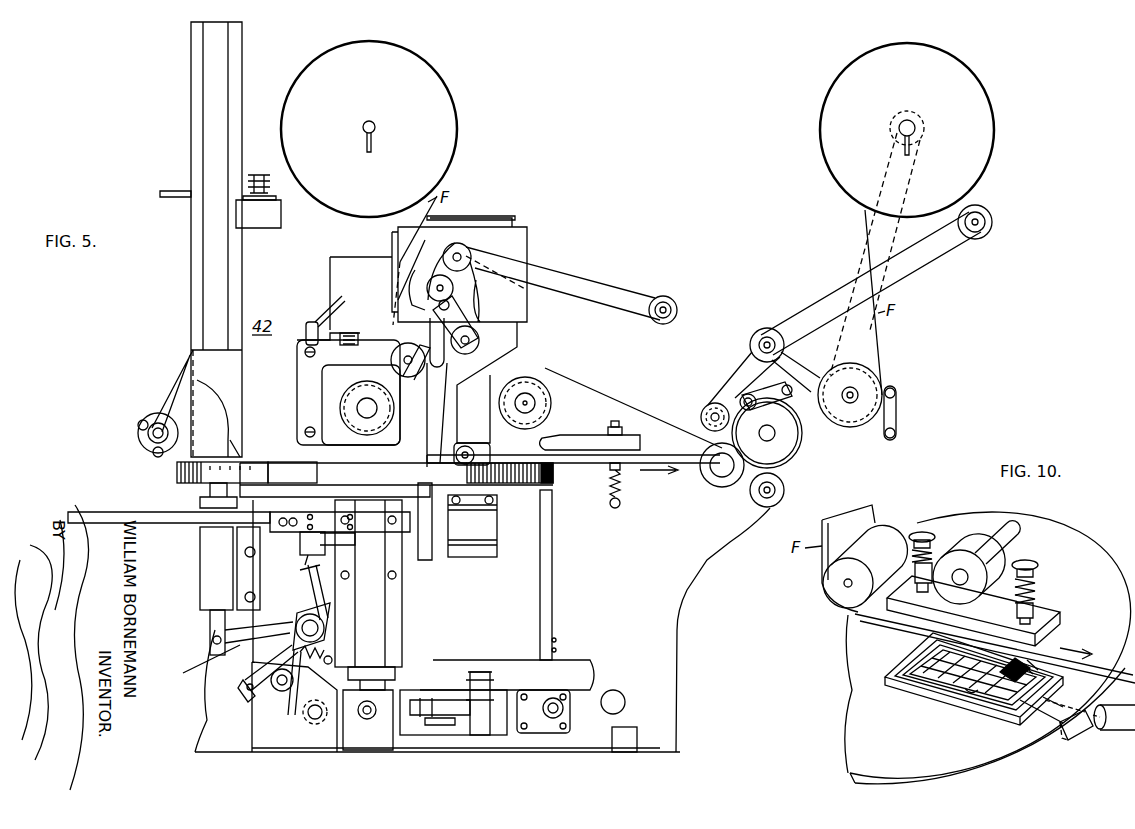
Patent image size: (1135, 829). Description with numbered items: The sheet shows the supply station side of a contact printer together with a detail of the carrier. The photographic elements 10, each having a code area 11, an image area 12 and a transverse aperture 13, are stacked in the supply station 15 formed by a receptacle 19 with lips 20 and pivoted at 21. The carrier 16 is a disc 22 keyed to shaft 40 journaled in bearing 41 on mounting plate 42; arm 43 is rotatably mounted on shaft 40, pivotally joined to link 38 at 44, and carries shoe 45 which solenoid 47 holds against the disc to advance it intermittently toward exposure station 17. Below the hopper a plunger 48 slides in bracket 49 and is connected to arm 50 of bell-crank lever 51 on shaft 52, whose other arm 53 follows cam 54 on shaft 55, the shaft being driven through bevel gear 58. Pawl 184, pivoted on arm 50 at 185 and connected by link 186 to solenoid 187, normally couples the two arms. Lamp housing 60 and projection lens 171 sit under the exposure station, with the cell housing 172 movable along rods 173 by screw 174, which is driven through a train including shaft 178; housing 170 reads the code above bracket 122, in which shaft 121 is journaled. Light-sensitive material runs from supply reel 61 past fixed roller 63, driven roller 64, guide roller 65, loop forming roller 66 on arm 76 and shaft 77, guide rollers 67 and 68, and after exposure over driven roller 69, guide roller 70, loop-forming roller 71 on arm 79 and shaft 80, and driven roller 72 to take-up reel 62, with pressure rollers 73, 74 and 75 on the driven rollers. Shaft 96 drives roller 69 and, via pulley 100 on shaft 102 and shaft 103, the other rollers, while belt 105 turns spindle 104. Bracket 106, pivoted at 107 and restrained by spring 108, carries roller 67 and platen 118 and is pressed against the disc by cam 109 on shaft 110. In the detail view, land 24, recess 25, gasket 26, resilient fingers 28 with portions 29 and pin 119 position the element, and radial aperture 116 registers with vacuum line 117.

In FIG. 10, the photographic element 10 is at (955, 680).
In FIG. 10, the code area 11 is at (1062, 655).
In FIG. 10, the image area 12 is at (1010, 677).
In FIG. 10, the transverse aperture 13 is at (1025, 680).
In FIG. 5, the supply station 15 is at (245, 455).
In FIG. 5, the carrier 16 is at (547, 489).
In FIG. 5, the exposure station 17 is at (556, 464).
In FIG. 5, the receptacle 19 is at (191, 282).
In FIG. 5, the lips 20 is at (200, 470).
In FIG. 5, the pivot mounting 21 is at (150, 428).
In FIG. 5, the disc 22 is at (422, 470).
In FIG. 10, the disc 22 is at (1121, 543).
In FIG. 10, the land 24 is at (915, 666).
In FIG. 10, the recess 25 is at (910, 672).
In FIG. 10, the gasket 26 is at (905, 683).
In FIG. 10, the resilient fingers 28 is at (910, 690).
In FIG. 10, the overlying portions 29 is at (968, 695).
In FIG. 5, the link 38 is at (105, 512).
In FIG. 5, the shaft 40 is at (387, 595).
In FIG. 5, the bearing 41 is at (402, 608).
In FIG. 5, the mounting plate 42 is at (668, 625).
In FIG. 5, the arm 43 is at (418, 525).
In FIG. 5, the pivotal connection 44 is at (237, 532).
In FIG. 5, the shoe 45 is at (283, 462).
In FIG. 5, the solenoid 47 is at (340, 532).
In FIG. 5, the plunger 48 is at (210, 620).
In FIG. 5, the bracket 49 is at (205, 562).
In FIG. 5, the arm 50 is at (200, 672).
In FIG. 5, the bell-crank lever 51 is at (260, 633).
In FIG. 5, the shaft 52 is at (297, 618).
In FIG. 5, the arm 53 is at (245, 686).
In FIG. 5, the cam 54 is at (292, 712).
In FIG. 5, the shaft 55 is at (280, 694).
In FIG. 5, the bevel gear 58 is at (262, 672).
In FIG. 5, the lamp housing 60 is at (530, 591).
In FIG. 5, the supply reel 61 is at (426, 88).
In FIG. 5, the take-up reel 62 is at (995, 137).
In FIG. 5, the fixed roller 63 is at (408, 283).
In FIG. 5, the driven roller 64 is at (412, 378).
In FIG. 5, the guide roller 65 is at (440, 288).
In FIG. 5, the loop forming roller 66 is at (470, 254).
In FIG. 5, the guide roller 67 is at (470, 443).
In FIG. 10, the guide roller 67 is at (824, 590).
In FIG. 5, the guide roller 68 is at (478, 332).
In FIG. 5, the driven roller 69 is at (790, 443).
In FIG. 5, the guide roller 70 is at (704, 410).
In FIG. 5, the loop-forming roller 71 is at (767, 328).
In FIG. 5, the driven roller 72 is at (856, 362).
In FIG. 5, the pressure roller 73 is at (470, 350).
In FIG. 5, the pressure roller 74 is at (747, 395).
In FIG. 5, the pressure roller 75 is at (897, 392).
In FIG. 5, the arm 76 is at (578, 282).
In FIG. 5, the shaft 77 is at (676, 300).
In FIG. 5, the arm 79 is at (853, 290).
In FIG. 5, the shaft 80 is at (975, 232).
In FIG. 5, the shaft 96 is at (770, 440).
In FIG. 5, the pulley 100 is at (825, 372).
In FIG. 5, the shaft 102 is at (850, 400).
In FIG. 5, the shaft 103 is at (404, 362).
In FIG. 5, the spindle 104 is at (900, 122).
In FIG. 5, the belt 105 is at (887, 232).
In FIG. 5, the bracket 106 is at (636, 448).
In FIG. 5, the pivot 107 is at (716, 482).
In FIG. 5, the spring 108 is at (622, 484).
In FIG. 5, the cam 109 is at (547, 390).
In FIG. 10, the cam 109 is at (960, 570).
In FIG. 5, the shaft 110 is at (527, 396).
In FIG. 10, the shaft 110 is at (1012, 530).
In FIG. 10, the radial aperture 116 is at (1065, 740).
In FIG. 10, the vacuum line 117 is at (1118, 730).
In FIG. 5, the platen 118 is at (552, 450).
In FIG. 10, the platen 118 is at (1042, 608).
In FIG. 10, the pin 119 is at (1045, 705).
In FIG. 5, the shaft 121 is at (358, 422).
In FIG. 5, the bracket 122 is at (297, 362).
In FIG. 5, the housing 170 is at (527, 252).
In FIG. 5, the projection lens 171 is at (497, 545).
In FIG. 5, the cell housing 172 is at (520, 338).
In FIG. 5, the rods 173 is at (445, 700).
In FIG. 5, the screw 174 is at (450, 725).
In FIG. 5, the shaft 178 is at (315, 724).
In FIG. 5, the pawl 184 is at (330, 645).
In FIG. 5, the pivot 185 is at (315, 605).
In FIG. 5, the link 186 is at (305, 562).
In FIG. 5, the solenoid 187 is at (300, 541).